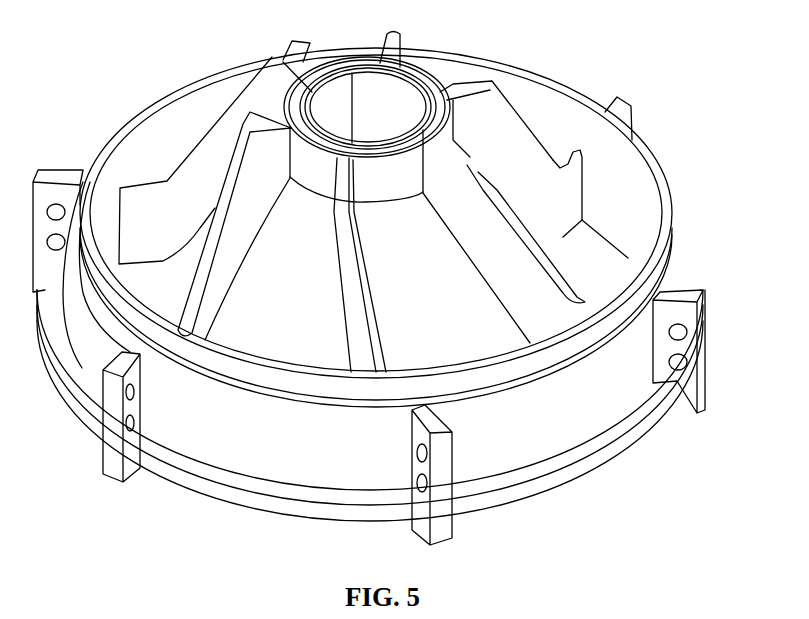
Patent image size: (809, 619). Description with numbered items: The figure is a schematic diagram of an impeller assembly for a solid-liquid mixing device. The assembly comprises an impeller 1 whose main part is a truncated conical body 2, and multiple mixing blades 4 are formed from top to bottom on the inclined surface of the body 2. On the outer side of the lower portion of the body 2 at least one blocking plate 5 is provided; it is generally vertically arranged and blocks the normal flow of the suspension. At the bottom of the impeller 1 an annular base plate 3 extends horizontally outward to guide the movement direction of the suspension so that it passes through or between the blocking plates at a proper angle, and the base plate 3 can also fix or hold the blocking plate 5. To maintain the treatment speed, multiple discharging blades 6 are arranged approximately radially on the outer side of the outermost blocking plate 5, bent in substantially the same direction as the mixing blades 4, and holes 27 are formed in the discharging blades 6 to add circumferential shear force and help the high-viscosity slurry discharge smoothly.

The impeller 1 is at (458, 77).
The truncated conical body 2 is at (447, 293).
The annular base plate 3 is at (227, 482).
The mixing blades 4 is at (510, 165).
The blocking plate 5 is at (162, 140).
The discharging blades 6 is at (115, 415).
The holes 27 is at (683, 362).